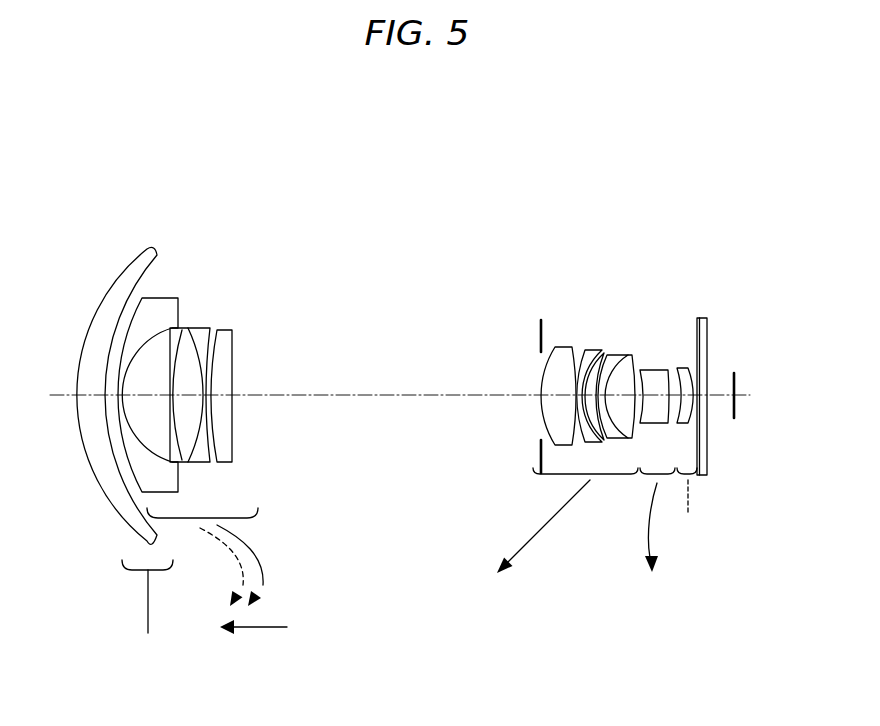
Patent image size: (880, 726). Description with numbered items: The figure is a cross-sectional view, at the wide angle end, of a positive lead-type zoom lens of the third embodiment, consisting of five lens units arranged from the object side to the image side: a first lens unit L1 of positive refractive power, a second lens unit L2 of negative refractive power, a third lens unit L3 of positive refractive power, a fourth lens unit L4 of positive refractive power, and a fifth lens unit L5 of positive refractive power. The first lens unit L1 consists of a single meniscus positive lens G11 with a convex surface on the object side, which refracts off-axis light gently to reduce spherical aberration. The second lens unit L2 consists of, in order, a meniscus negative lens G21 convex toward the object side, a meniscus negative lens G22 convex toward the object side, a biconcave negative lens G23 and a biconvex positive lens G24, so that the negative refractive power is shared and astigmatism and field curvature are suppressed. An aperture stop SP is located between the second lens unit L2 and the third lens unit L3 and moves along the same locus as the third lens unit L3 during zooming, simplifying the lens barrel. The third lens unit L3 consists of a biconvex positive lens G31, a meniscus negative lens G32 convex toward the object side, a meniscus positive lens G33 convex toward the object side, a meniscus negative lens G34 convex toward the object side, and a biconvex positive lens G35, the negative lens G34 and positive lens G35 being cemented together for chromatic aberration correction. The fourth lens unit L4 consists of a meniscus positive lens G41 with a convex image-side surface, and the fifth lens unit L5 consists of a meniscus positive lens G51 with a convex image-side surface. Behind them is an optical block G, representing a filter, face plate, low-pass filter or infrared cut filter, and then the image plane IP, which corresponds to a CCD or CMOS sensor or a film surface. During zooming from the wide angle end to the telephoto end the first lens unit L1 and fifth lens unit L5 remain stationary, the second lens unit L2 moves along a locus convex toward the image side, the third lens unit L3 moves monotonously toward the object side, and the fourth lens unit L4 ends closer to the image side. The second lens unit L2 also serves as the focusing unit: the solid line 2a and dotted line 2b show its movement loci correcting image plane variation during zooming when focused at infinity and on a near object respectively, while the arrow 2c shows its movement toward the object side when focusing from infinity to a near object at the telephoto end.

The first lens unit L1 is at (167, 186).
The second lens unit L2 is at (180, 187).
The third lens unit L3 is at (465, 248).
The fourth lens unit L4 is at (677, 233).
The fifth lens unit L5 is at (742, 233).
The positive lens G11 is at (148, 248).
The negative lens G21 is at (160, 307).
The negative lens G22 is at (177, 330).
The negative lens G23 is at (205, 330).
The positive lens G24 is at (228, 330).
The positive lens G31 is at (552, 378).
The negative lens G32 is at (566, 358).
The positive lens G33 is at (593, 350).
The negative lens G34 is at (612, 355).
The positive lens G35 is at (627, 355).
The positive lens G41 is at (657, 377).
The positive lens G51 is at (687, 368).
The optical block G is at (715, 317).
The aperture stop SP is at (540, 455).
The image plane IP is at (735, 382).
The solid line 2a is at (260, 553).
The dotted line 2b is at (240, 557).
The arrow 2c is at (260, 629).